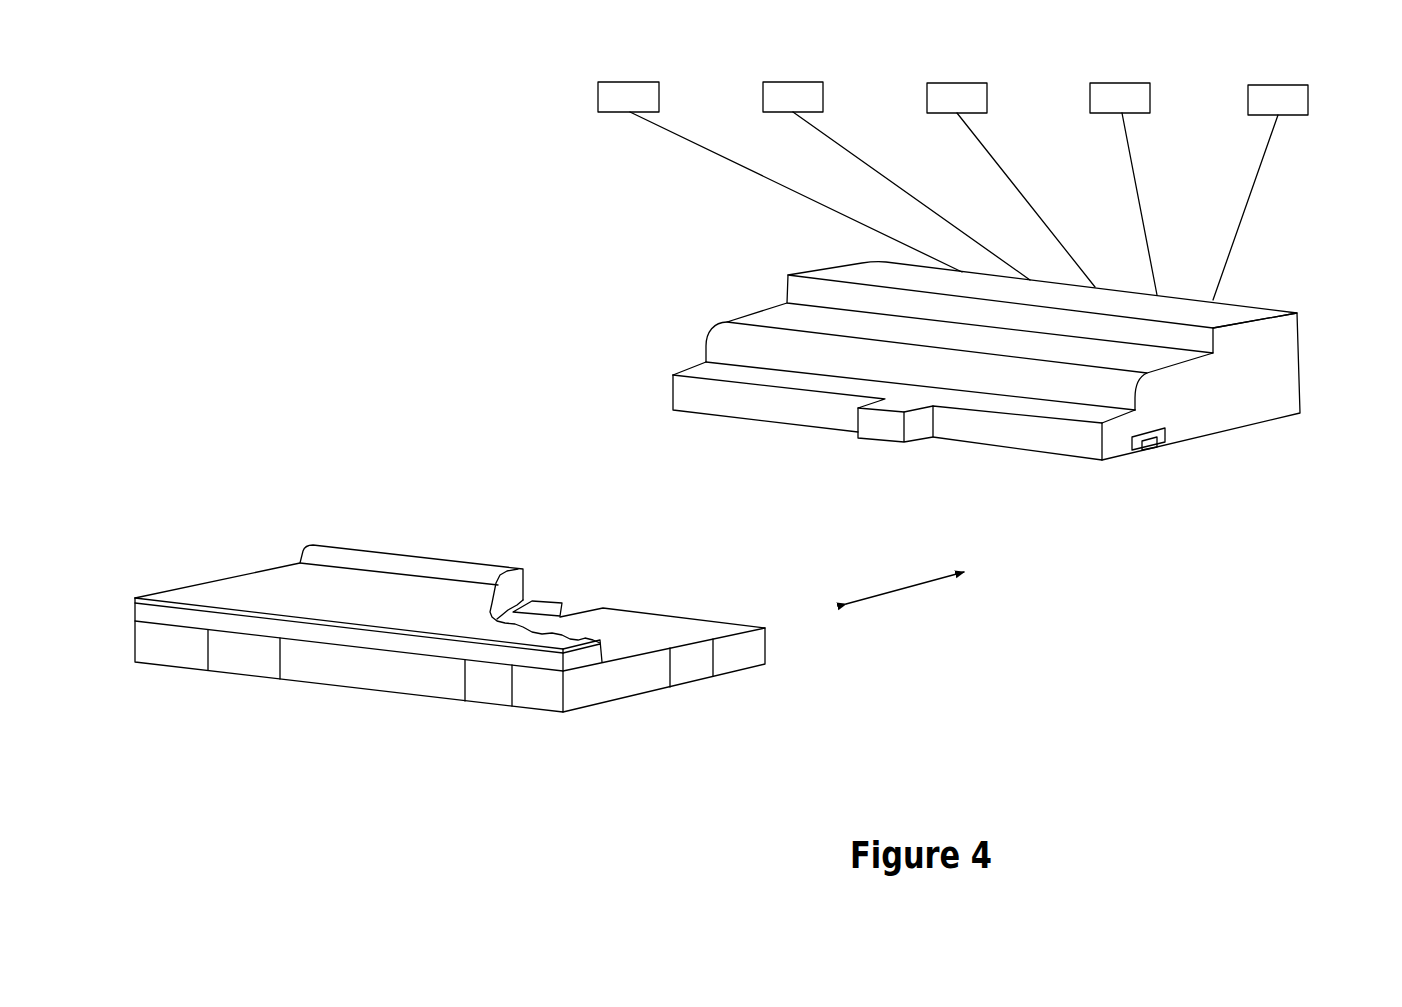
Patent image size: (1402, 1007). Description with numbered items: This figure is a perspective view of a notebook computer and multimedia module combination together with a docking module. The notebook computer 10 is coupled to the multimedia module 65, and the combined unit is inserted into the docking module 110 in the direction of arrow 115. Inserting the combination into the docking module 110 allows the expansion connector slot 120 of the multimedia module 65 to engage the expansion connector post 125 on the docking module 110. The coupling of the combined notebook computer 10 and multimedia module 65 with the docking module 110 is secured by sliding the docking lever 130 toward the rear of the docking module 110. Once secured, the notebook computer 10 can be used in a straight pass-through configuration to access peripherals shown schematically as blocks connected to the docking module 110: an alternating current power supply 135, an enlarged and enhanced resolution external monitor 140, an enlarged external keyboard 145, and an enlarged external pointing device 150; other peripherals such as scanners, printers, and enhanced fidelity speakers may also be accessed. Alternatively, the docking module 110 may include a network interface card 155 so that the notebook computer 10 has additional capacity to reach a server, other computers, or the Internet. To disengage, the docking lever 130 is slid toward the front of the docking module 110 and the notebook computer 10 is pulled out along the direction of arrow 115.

The notebook computer 10 is at (450, 616).
The multimedia module 65 is at (586, 722).
The docking module 110 is at (1036, 356).
The arrow 115 is at (875, 598).
The expansion connector slot 120 is at (558, 608).
The expansion connector post 125 is at (878, 428).
The docking lever 130 is at (1153, 449).
The alternating current (AC) power supply 135 is at (600, 82).
The external monitor 140 is at (765, 82).
The external keyboard 145 is at (940, 83).
The external pointing device 150 is at (1102, 83).
The network interface card 155 is at (1262, 85).